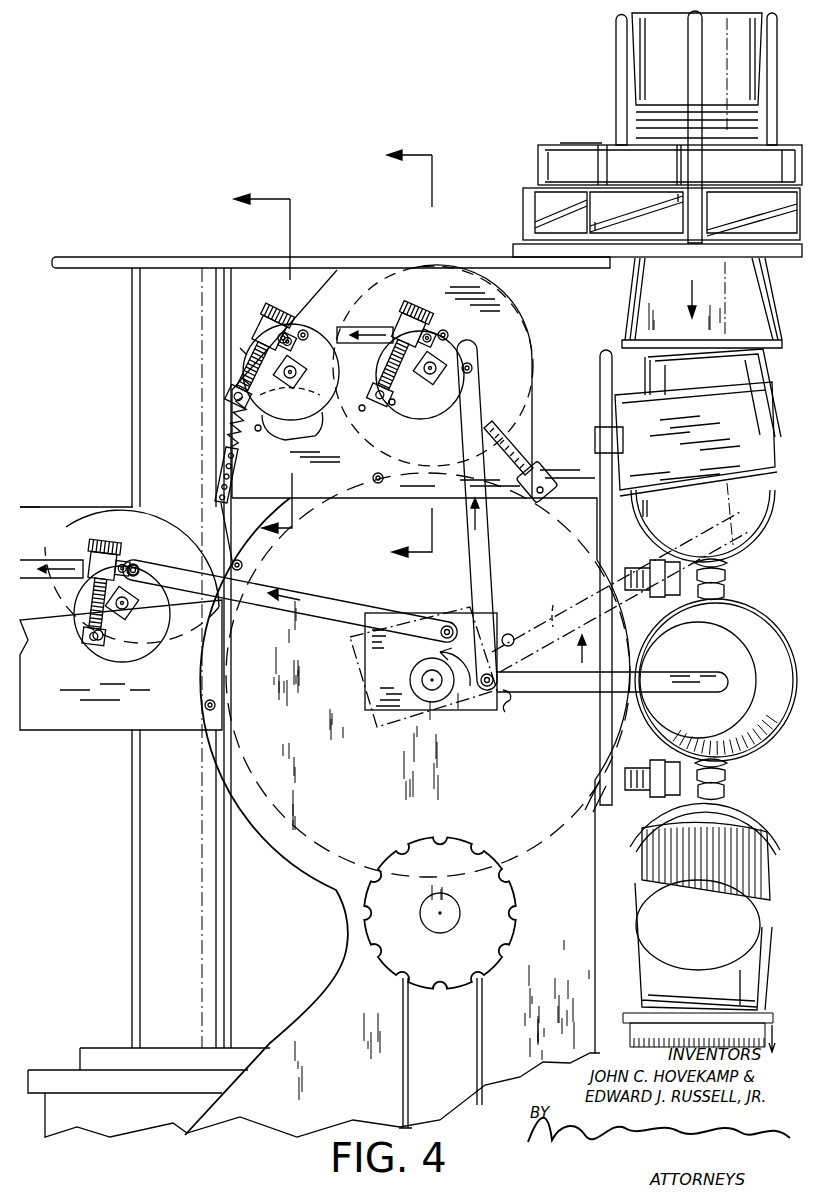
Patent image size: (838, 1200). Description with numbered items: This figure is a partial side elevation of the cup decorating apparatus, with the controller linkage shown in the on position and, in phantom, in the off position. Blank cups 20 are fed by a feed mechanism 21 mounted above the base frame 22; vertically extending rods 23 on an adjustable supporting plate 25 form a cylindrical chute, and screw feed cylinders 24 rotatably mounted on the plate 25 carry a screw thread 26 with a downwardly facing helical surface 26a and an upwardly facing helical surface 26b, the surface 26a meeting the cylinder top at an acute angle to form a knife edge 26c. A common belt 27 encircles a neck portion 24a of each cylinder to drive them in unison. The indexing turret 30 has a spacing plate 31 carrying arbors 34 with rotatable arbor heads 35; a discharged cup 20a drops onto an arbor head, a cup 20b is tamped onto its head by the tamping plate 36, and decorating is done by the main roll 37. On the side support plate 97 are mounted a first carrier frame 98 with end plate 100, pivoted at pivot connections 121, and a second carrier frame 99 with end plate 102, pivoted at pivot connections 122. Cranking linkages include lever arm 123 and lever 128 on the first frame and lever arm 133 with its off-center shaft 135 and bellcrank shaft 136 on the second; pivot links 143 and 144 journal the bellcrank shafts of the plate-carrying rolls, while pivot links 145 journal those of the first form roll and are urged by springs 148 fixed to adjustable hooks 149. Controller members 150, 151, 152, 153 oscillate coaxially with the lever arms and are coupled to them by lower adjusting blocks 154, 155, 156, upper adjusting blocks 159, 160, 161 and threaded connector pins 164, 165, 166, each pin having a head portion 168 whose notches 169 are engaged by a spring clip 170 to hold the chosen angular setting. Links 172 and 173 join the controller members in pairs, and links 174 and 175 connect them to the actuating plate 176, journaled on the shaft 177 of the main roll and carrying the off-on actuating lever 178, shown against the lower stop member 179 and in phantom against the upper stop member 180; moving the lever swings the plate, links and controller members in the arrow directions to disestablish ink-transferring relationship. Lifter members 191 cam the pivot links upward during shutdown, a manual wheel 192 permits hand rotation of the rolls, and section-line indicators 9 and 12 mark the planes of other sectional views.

The blank cups 20 is at (746, 28).
The cup 20a is at (640, 285).
The cup 20b is at (744, 525).
The feed mechanism 21 is at (547, 119).
The base frame 22 is at (68, 1072).
The vertically extending rods 23 is at (618, 78).
The screw feed cylinders 24 is at (528, 192).
The neck portion 24a is at (598, 136).
The adjustable supporting plate 25 is at (514, 246).
The screw thread 26 is at (535, 216).
The downwardly facing helical surface 26a is at (620, 200).
The upwardly facing helical surface 26b is at (616, 218).
The knife edge 26c is at (690, 200).
The common belt 27 is at (540, 166).
The indexing turret 30 is at (745, 596).
The spacing plate 31 is at (662, 752).
The arbors 34 is at (732, 792).
The arbor head 35 is at (772, 360).
The tamping plate 36 is at (772, 456).
The main cylinder or roll 37 is at (600, 796).
The side support plate 97 is at (326, 884).
The first carrier frame 98 is at (226, 413).
The second carrier frame 99 is at (48, 730).
The end plate 100 is at (512, 415).
The end plate 102 is at (68, 507).
The pivot connections 121 is at (372, 479).
The pivot connections 122 is at (204, 706).
The lever arm 123 is at (436, 382).
The lever 128 is at (288, 388).
The lever arm 133 is at (104, 634).
The shaft 135 is at (82, 590).
The bellcrank shaft 136 is at (128, 603).
The pivot links 143 is at (545, 470).
The pivot links 144 is at (214, 572).
The pivot links 145 is at (342, 394).
The springs 148 is at (224, 448).
The hooks 149 is at (232, 466).
The controller member 150 is at (420, 387).
The controller member 151 is at (340, 345).
The controller member 152 is at (160, 638).
The controller member 153 is at (22, 640).
The lower adjusting block 154 is at (395, 421).
The lower adjusting block 155 is at (250, 385).
The lower adjusting block 156 is at (80, 632).
The upper adjusting block 159 is at (400, 322).
The upper adjusting block 160 is at (258, 325).
The upper adjusting block 161 is at (46, 537).
The threaded connector pin 164 is at (338, 374).
The threaded connector pin 165 is at (247, 355).
The threaded connector pin 166 is at (84, 612).
The head portion 168 is at (116, 545).
The notches 169 is at (126, 558).
The spring clip 170 is at (82, 540).
The link 172 is at (338, 330).
The link 173 is at (70, 518).
The link 174 is at (486, 571).
The link 175 is at (314, 590).
The actuating plate 176 is at (368, 698).
The shaft 177 is at (432, 670).
The off-on actuating lever 178 is at (548, 700).
The lower stop member 179 is at (517, 712).
The upper stop member 180 is at (510, 634).
The lifter members 191 is at (298, 431).
The manual wheel 192 is at (512, 932).
The section line FIG. 9 is at (396, 355).
The section line FIG. 12 is at (246, 372).